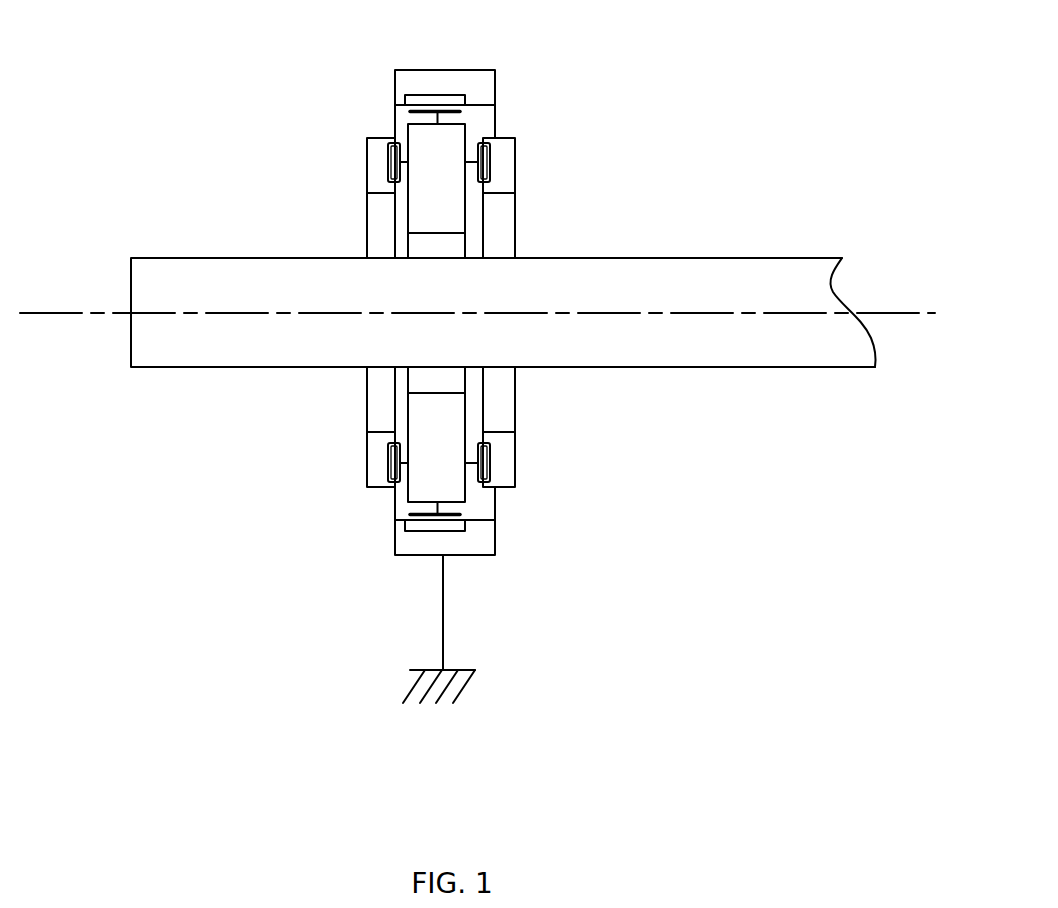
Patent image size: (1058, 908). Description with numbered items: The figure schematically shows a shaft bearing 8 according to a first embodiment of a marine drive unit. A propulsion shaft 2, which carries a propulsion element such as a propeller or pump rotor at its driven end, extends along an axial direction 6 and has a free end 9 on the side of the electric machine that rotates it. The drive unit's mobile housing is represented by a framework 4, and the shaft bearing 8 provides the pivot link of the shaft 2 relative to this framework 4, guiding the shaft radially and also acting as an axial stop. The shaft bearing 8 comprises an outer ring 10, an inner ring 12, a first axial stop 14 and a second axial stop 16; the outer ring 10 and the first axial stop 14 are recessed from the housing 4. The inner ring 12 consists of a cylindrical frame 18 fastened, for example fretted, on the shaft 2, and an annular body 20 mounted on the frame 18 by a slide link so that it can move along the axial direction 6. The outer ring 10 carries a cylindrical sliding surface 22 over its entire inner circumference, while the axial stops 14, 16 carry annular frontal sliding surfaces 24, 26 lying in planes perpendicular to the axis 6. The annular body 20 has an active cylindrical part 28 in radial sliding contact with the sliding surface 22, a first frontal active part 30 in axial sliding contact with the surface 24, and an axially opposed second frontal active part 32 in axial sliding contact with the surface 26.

The propulsion shaft 2 is at (753, 258).
The framework 4 is at (468, 683).
The axial direction 6 is at (912, 315).
The shaft bearing 8 is at (370, 527).
The free end 9 is at (130, 337).
The outer ring 10 is at (395, 560).
The inner ring 12 is at (398, 131).
The first axial stop 14 is at (367, 176).
The second axial stop 16 is at (517, 165).
The cylindrical frame 18 is at (432, 382).
The annular body 20 is at (442, 485).
The cylindrical sliding surface 22 is at (441, 95).
The frontal sliding surface 24 is at (387, 170).
The frontal sliding surface 26 is at (491, 170).
The active cylindrical part 28 is at (400, 108).
The first frontal active part 30 is at (403, 477).
The second frontal active part 32 is at (468, 486).